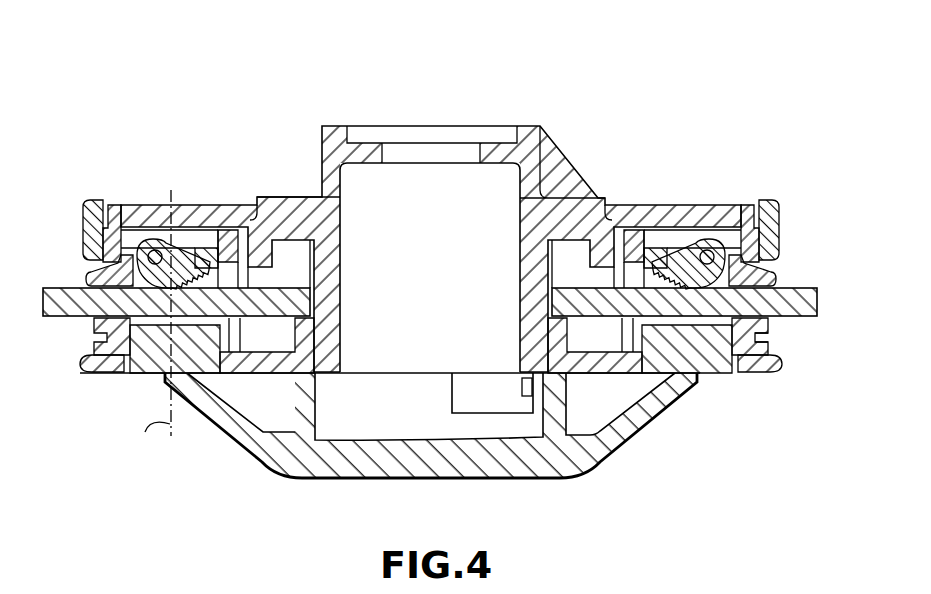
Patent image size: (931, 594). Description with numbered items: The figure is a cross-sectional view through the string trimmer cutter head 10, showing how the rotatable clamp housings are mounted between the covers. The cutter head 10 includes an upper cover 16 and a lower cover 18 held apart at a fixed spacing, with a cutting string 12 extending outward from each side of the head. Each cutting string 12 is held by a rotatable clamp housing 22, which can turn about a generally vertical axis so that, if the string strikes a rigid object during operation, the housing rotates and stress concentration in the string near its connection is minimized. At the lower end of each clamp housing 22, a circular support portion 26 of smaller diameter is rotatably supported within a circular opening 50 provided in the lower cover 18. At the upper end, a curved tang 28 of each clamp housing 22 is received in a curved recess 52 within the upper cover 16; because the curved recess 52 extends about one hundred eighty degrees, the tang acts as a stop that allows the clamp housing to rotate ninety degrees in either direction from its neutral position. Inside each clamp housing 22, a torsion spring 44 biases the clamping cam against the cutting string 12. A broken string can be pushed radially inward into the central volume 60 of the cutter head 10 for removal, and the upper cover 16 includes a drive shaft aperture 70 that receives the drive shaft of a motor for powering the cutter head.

The cutter head 10 is at (438, 249).
The cutting string 12 is at (62, 287).
The upper cover 16 is at (610, 192).
The lower cover 18 is at (678, 420).
The rotatable clamp housing 22 is at (780, 341).
The circular support portion 26 is at (193, 360).
The curved tang 28 is at (112, 236).
The torsion spring 44 is at (178, 248).
The circular opening 50 is at (135, 374).
The curved recess 52 is at (130, 203).
The central volume 60 is at (437, 297).
The drive shaft aperture 70 is at (373, 160).